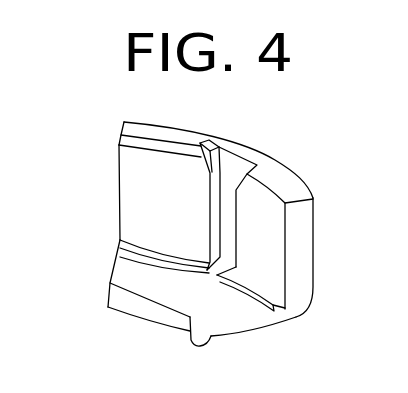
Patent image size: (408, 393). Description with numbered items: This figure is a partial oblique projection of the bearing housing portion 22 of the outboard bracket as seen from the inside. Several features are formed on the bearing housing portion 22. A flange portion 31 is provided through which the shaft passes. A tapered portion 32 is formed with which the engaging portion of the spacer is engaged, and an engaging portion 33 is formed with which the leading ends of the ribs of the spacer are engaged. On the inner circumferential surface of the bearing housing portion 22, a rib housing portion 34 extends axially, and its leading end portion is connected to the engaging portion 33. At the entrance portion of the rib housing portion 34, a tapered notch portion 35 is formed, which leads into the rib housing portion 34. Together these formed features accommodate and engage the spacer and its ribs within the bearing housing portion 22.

The bearing housing portion 22 is at (288, 184).
The flange portion 31 is at (113, 274).
The tapered portion 32 is at (259, 308).
The engaging portion 33 is at (193, 268).
The rib housing portion 34 is at (224, 198).
The tapered notch portion 35 is at (214, 150).